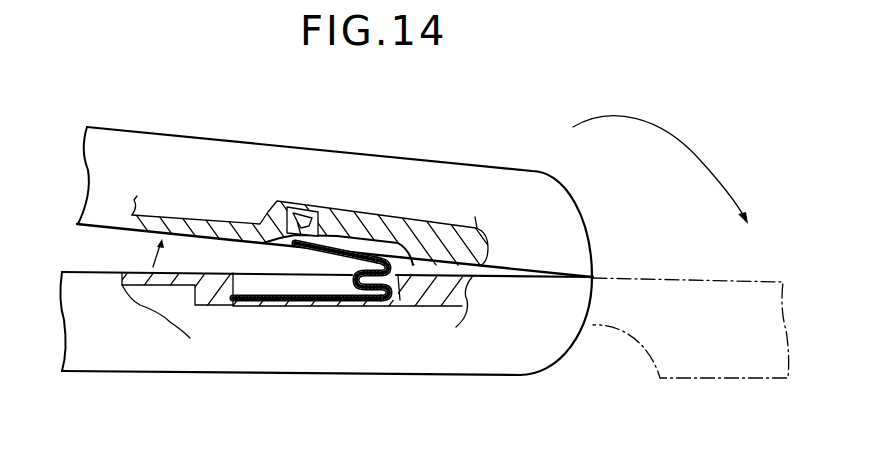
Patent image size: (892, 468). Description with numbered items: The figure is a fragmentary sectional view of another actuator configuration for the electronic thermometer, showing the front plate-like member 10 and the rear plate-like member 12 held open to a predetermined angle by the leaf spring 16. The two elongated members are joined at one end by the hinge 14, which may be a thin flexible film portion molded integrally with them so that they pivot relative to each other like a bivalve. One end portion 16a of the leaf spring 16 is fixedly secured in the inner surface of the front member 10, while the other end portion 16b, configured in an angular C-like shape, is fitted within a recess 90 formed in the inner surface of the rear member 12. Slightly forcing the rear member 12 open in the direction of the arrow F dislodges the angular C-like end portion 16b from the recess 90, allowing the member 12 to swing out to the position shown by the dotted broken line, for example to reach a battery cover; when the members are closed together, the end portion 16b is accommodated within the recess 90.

The front plate-like member 10 is at (163, 365).
The rear plate-like member 12 is at (242, 150).
The hinge 14 is at (592, 278).
The leaf spring 16 is at (373, 300).
The one end portion of the leaf spring 16a is at (283, 303).
The angular C-like end portion of the leaf spring 16b is at (300, 243).
The recess 90 is at (293, 213).
The direction of forced opening F is at (680, 138).